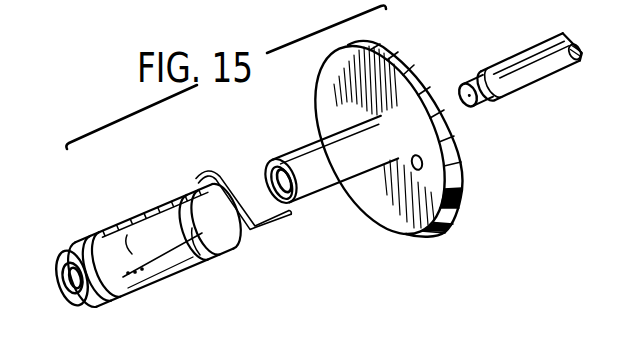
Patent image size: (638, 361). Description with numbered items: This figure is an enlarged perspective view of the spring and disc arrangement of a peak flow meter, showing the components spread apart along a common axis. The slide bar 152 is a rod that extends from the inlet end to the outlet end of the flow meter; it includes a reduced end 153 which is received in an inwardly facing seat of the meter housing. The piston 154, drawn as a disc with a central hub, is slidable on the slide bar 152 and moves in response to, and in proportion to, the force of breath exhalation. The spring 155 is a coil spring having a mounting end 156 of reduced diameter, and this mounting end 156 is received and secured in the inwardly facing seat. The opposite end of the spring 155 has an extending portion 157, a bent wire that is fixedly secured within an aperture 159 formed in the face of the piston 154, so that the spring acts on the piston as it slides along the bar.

The slide bar 152 is at (507, 82).
The reduced end 153 is at (485, 105).
The piston 154 is at (418, 237).
The spring 155 is at (192, 228).
The mounting end 156 is at (92, 300).
The extending portion 157 is at (289, 214).
The aperture 159 is at (422, 168).